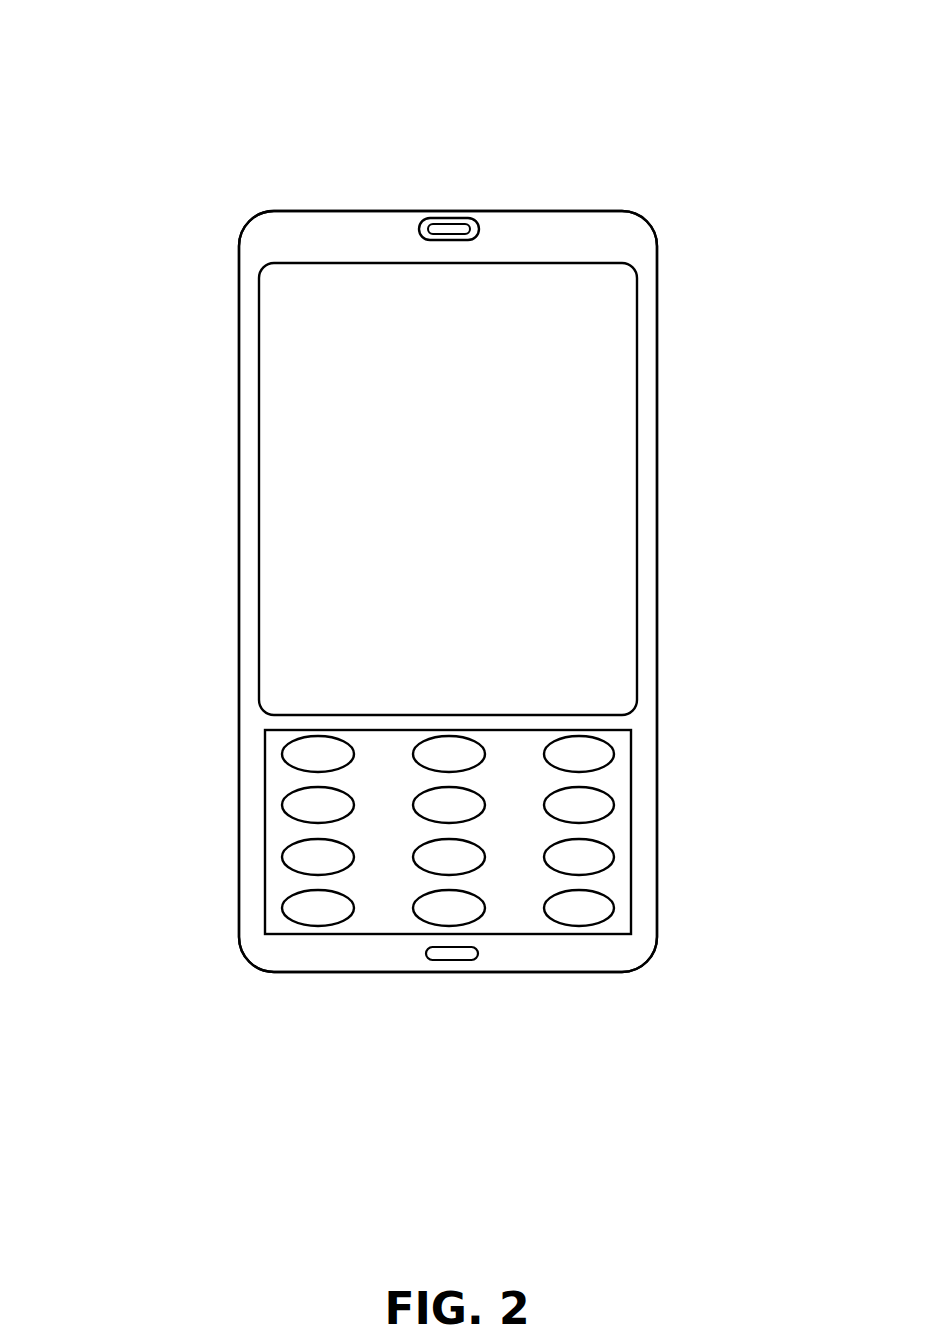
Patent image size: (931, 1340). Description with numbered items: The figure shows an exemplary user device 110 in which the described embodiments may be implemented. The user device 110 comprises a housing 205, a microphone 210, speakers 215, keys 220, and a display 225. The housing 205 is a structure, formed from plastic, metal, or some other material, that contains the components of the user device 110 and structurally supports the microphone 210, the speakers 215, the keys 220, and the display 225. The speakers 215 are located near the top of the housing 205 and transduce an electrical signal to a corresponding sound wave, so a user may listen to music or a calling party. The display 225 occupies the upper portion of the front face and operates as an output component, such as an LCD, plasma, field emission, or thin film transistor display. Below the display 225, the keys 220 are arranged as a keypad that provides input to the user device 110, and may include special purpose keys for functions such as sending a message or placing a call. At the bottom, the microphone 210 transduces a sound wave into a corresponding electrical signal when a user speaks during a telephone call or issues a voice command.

The user device 110 is at (196, 66).
The housing 205 is at (238, 532).
The microphone 210 is at (467, 960).
The speakers 215 is at (460, 218).
The keys 220 is at (671, 924).
The display 225 is at (622, 473).